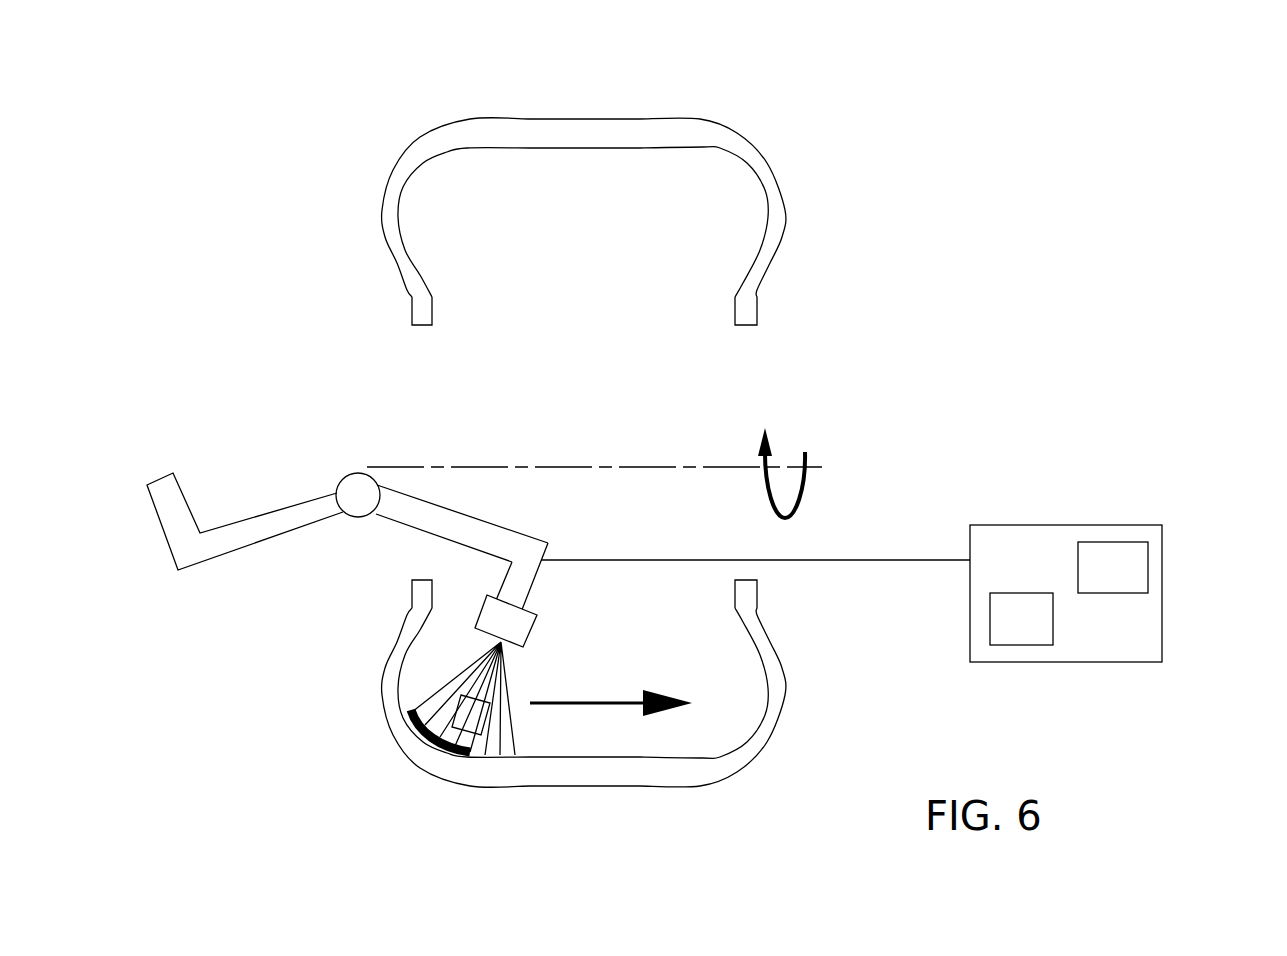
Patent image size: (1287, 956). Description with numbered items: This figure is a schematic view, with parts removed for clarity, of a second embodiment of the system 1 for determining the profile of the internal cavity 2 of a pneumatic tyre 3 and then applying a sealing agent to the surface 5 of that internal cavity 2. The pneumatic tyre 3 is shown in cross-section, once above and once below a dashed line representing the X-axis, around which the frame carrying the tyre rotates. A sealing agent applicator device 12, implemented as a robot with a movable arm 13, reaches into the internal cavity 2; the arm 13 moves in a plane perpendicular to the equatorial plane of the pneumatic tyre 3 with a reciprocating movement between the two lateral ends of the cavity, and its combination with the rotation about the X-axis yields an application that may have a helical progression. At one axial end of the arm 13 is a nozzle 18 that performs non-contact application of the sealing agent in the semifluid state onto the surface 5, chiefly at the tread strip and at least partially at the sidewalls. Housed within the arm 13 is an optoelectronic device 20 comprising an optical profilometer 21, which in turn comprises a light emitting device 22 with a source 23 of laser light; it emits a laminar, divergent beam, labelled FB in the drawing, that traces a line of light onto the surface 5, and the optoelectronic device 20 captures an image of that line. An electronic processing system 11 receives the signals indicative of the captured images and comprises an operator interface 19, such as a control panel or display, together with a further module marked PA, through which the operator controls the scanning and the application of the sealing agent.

The system 1 is at (674, 179).
The internal cavity 2 is at (645, 190).
The pneumatic tyre 3 is at (778, 207).
The surface 5 is at (503, 157).
The electronic processing system 11 is at (1117, 558).
The sealing agent applicator device 12 is at (250, 582).
The arm 13 is at (518, 540).
The nozzle 18 is at (485, 738).
The operator interface 19 is at (1113, 567).
The optoelectronic device 20 is at (564, 656).
The optical profilometer 21 is at (463, 607).
The light emitting device 22 is at (530, 625).
The source of laser light 23 is at (471, 715).
The X-axis X is at (649, 466).
The beam FB is at (442, 687).
The pattern analysis module PA is at (1021, 619).